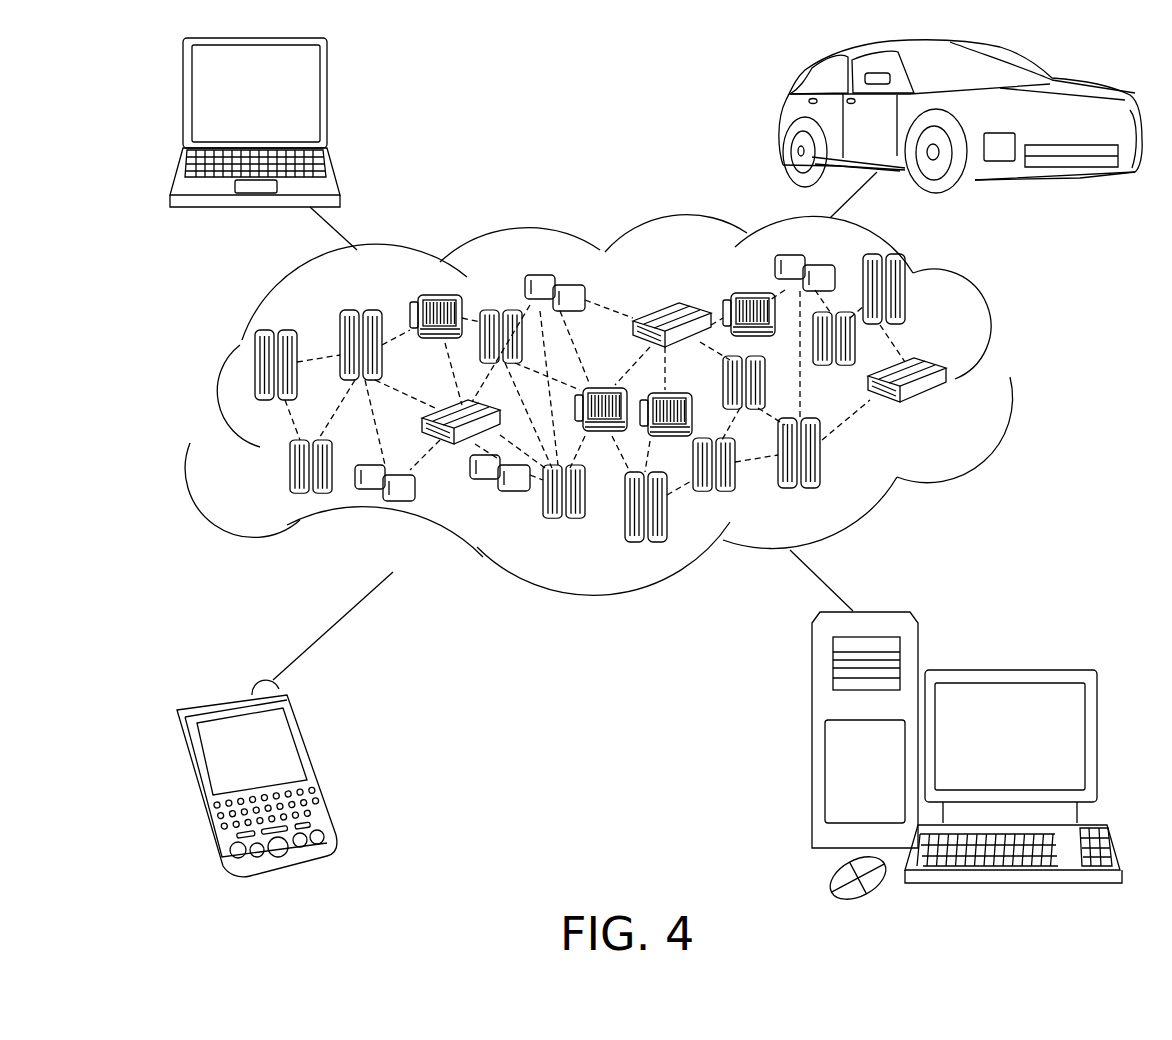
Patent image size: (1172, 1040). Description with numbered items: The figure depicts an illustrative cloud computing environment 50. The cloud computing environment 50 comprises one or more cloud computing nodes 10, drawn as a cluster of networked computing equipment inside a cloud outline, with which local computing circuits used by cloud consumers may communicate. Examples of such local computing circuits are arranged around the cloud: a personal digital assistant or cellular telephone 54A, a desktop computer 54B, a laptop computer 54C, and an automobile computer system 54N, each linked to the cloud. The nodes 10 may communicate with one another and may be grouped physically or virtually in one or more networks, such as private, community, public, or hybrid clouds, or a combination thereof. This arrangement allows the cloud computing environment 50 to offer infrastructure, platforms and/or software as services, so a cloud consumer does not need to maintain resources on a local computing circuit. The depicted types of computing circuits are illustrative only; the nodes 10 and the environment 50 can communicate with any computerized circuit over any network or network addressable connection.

The cloud computing node 10 is at (947, 407).
The cloud computing environment 50 is at (626, 405).
The personal digital assistant (PDA) or cellular telephone 54A is at (317, 767).
The desktop computer 54B is at (1007, 670).
The laptop computer 54C is at (330, 100).
The automobile computer system 54N is at (780, 120).